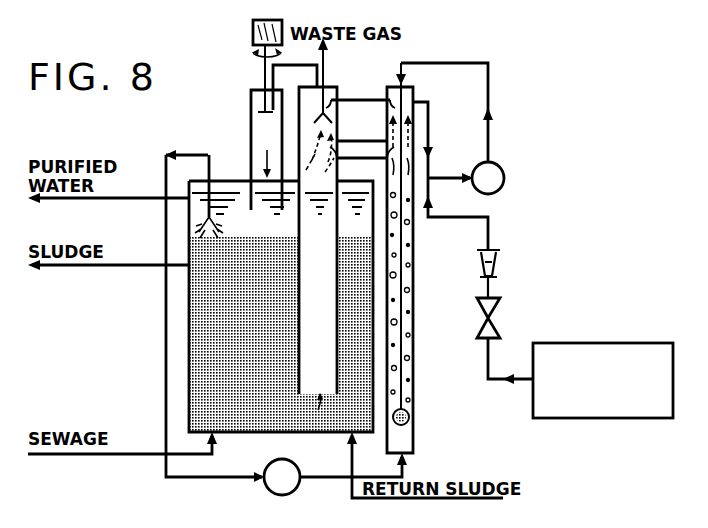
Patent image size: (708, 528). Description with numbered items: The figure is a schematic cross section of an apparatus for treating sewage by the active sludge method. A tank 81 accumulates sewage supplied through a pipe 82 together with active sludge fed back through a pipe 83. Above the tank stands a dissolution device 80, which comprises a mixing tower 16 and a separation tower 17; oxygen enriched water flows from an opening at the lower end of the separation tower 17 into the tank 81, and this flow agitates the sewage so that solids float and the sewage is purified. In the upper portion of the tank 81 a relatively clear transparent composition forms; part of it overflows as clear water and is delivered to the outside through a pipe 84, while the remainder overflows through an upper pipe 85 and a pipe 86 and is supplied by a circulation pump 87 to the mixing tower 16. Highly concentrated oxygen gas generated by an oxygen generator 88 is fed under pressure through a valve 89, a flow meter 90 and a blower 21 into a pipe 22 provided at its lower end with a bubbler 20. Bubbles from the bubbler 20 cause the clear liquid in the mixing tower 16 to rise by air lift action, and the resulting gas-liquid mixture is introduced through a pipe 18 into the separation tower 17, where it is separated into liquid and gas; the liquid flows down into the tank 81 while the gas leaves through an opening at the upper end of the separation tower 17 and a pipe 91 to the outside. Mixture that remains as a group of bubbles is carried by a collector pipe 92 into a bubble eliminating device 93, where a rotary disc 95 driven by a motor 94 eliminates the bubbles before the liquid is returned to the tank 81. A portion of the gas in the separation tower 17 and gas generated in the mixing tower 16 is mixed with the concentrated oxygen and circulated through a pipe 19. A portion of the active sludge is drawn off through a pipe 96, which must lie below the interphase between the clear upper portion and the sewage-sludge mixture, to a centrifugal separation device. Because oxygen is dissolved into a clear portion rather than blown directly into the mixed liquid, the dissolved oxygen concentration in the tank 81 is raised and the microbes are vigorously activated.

The mixing tower 16 is at (416, 316).
The separation tower 17 is at (299, 301).
The pipe 18 is at (375, 128).
The pipe 19 is at (355, 100).
The bubbler 20 is at (416, 422).
The blower 21 is at (506, 172).
The pipe 22 is at (405, 359).
The dissolution device 80 is at (424, 267).
The tank 81 is at (300, 433).
The pipe 82 is at (149, 448).
The pipe 83 is at (351, 485).
The pipe 84 is at (149, 195).
The upper pipe 85 is at (195, 146).
The pipe 86 is at (164, 354).
The circulation pump 87 is at (268, 466).
The oxygen generator 88 is at (620, 344).
The valve 89 is at (500, 315).
The flow meter 90 is at (500, 262).
The pipe 91 is at (327, 80).
The collector pipe 92 is at (284, 64).
The bubble eliminating device 93 is at (209, 160).
The motor 94 is at (255, 46).
The rotary disc 95 is at (251, 127).
The pipe 96 is at (149, 262).